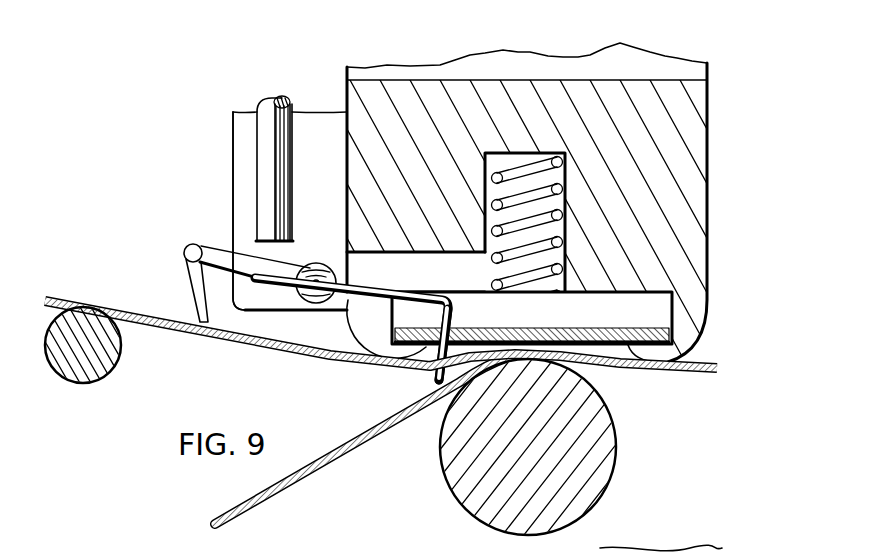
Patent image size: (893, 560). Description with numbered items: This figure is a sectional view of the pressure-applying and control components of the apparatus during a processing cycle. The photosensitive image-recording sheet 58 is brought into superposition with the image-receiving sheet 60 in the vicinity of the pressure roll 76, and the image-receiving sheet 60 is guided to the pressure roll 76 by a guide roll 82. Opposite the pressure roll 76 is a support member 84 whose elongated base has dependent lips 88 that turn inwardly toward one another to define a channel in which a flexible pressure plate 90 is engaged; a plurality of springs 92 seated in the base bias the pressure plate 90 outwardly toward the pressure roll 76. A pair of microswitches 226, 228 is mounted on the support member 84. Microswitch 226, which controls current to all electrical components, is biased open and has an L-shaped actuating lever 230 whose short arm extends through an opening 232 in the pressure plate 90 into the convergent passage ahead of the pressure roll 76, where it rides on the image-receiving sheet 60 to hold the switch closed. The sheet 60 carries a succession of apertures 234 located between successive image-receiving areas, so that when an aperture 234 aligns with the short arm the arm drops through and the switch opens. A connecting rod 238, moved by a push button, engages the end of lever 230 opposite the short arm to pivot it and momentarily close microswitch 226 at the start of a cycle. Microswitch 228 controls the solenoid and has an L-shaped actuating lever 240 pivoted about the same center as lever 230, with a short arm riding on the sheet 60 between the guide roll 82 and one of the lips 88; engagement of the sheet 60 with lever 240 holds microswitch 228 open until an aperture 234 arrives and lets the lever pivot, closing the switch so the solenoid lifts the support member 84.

The photosensitive image-recording sheet 58 is at (365, 439).
The image-receiving sheet 60 is at (272, 348).
The pressure roll 76 is at (610, 452).
The guide roll 82 is at (104, 358).
The support member 84 is at (714, 263).
The lips 88 is at (365, 334).
The pressure plate 90 is at (626, 332).
The springs 92 is at (553, 152).
The microswitch 226 is at (241, 144).
The microswitch 228 is at (290, 211).
The actuating lever 230 is at (390, 295).
The opening 232 is at (451, 302).
The apertures 234 is at (430, 372).
The connecting rod 238 is at (263, 195).
The actuating lever 240 is at (218, 247).